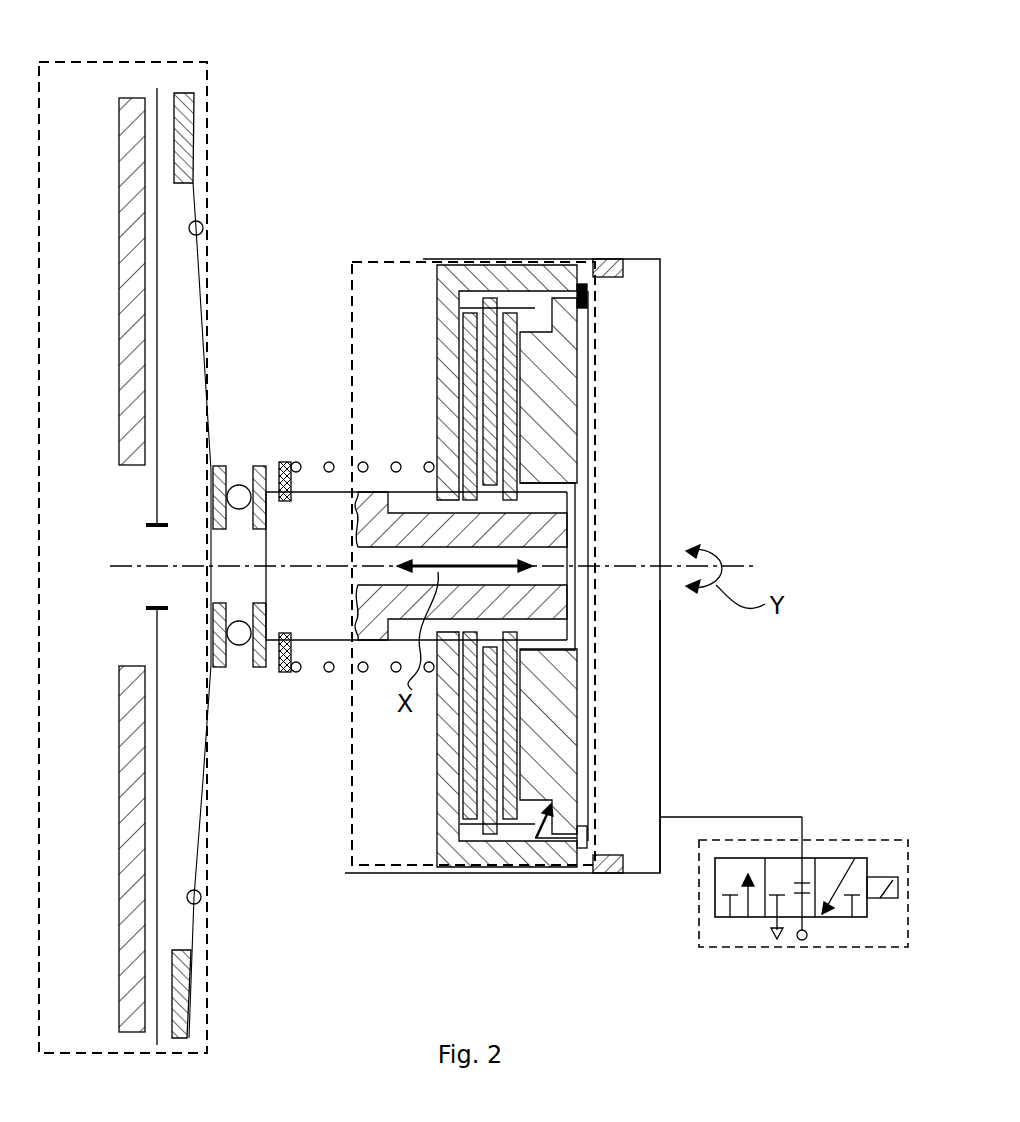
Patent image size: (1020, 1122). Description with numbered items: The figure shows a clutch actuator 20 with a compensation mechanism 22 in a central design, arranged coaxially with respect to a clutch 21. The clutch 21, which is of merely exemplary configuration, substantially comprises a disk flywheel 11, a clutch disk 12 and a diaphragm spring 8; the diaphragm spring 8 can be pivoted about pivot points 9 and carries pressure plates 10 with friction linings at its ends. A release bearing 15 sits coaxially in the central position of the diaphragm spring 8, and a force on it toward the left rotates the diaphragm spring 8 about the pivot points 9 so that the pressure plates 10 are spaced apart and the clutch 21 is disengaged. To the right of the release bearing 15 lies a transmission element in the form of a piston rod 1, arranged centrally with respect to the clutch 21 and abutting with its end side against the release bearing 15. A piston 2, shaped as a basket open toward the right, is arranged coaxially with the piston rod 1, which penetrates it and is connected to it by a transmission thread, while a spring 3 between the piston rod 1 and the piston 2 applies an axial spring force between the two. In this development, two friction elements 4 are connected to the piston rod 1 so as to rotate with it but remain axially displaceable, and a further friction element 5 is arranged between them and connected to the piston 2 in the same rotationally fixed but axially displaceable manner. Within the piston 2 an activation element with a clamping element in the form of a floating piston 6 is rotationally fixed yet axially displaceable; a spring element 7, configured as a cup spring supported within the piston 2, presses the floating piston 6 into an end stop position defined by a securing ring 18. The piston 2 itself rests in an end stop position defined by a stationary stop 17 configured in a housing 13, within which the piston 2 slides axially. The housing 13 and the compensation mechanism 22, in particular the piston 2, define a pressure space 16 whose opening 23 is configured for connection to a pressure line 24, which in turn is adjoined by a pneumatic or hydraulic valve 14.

The piston rod 1 is at (333, 632).
The piston 2 is at (547, 330).
The spring 3 is at (326, 458).
The friction element 4 is at (466, 313).
The friction element 5 is at (491, 298).
The floating piston 6 is at (580, 343).
The spring element 7 is at (547, 843).
The diaphragm spring 8 is at (207, 808).
The pivot point 9 is at (201, 897).
The pressure plate 10 is at (190, 1003).
The disk flywheel 11 is at (131, 100).
The clutch disk 12 is at (162, 100).
The housing 13 is at (660, 705).
The valve 14 is at (857, 840).
The release bearing 15 is at (239, 645).
The pressure space 16 is at (622, 455).
The stop 17 is at (617, 262).
The securing ring 18 is at (590, 830).
The clutch actuator 20 is at (527, 148).
The clutch 21 is at (208, 155).
The compensation mechanism 22 is at (372, 262).
The opening 23 is at (663, 812).
The pressure line 24 is at (750, 817).